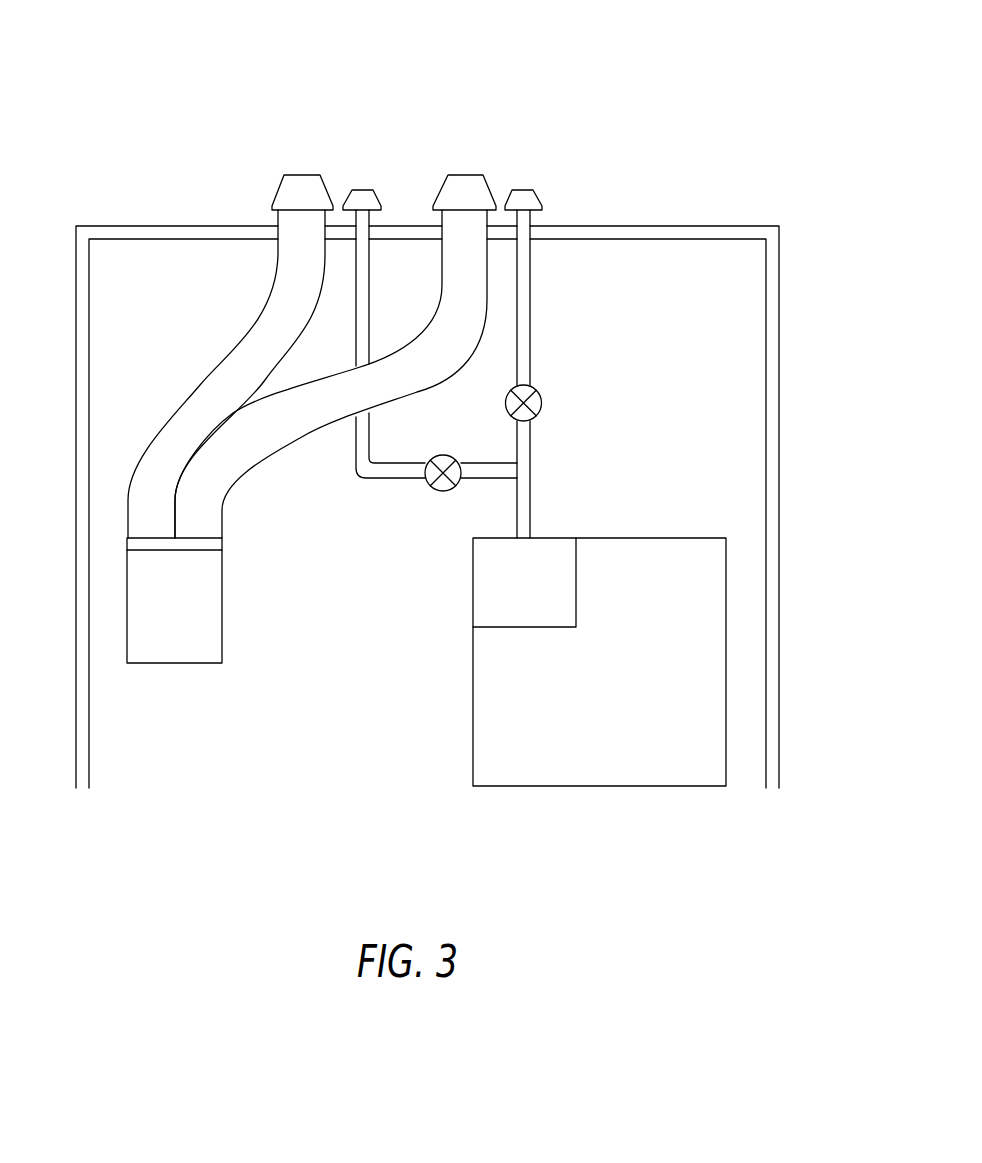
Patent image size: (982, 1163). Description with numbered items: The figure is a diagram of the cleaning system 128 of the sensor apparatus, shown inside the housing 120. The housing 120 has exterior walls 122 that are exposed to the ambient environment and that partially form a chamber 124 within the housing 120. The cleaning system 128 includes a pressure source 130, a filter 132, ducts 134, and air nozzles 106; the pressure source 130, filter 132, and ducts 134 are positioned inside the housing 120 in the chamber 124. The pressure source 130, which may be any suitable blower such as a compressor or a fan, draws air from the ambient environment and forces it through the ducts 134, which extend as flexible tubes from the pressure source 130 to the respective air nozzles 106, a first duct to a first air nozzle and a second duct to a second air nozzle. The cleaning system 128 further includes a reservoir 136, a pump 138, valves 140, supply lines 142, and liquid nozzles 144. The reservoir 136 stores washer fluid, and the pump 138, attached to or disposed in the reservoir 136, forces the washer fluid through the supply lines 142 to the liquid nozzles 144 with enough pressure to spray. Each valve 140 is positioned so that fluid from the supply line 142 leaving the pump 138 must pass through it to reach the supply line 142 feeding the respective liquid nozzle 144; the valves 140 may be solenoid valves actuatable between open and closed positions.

The air nozzles 106 is at (297, 173).
The housing 120 is at (779, 383).
The exterior walls 122 is at (628, 225).
The chamber 124 is at (718, 314).
The cleaning system 128 is at (147, 78).
The pressure source 130 is at (222, 632).
The filter 132 is at (222, 546).
The ducts 134 is at (243, 443).
The reservoir 136 is at (473, 729).
The pump 138 is at (473, 572).
The valves 140 is at (508, 412).
The supply lines 142 is at (369, 292).
The liquid nozzles 144 is at (358, 188).